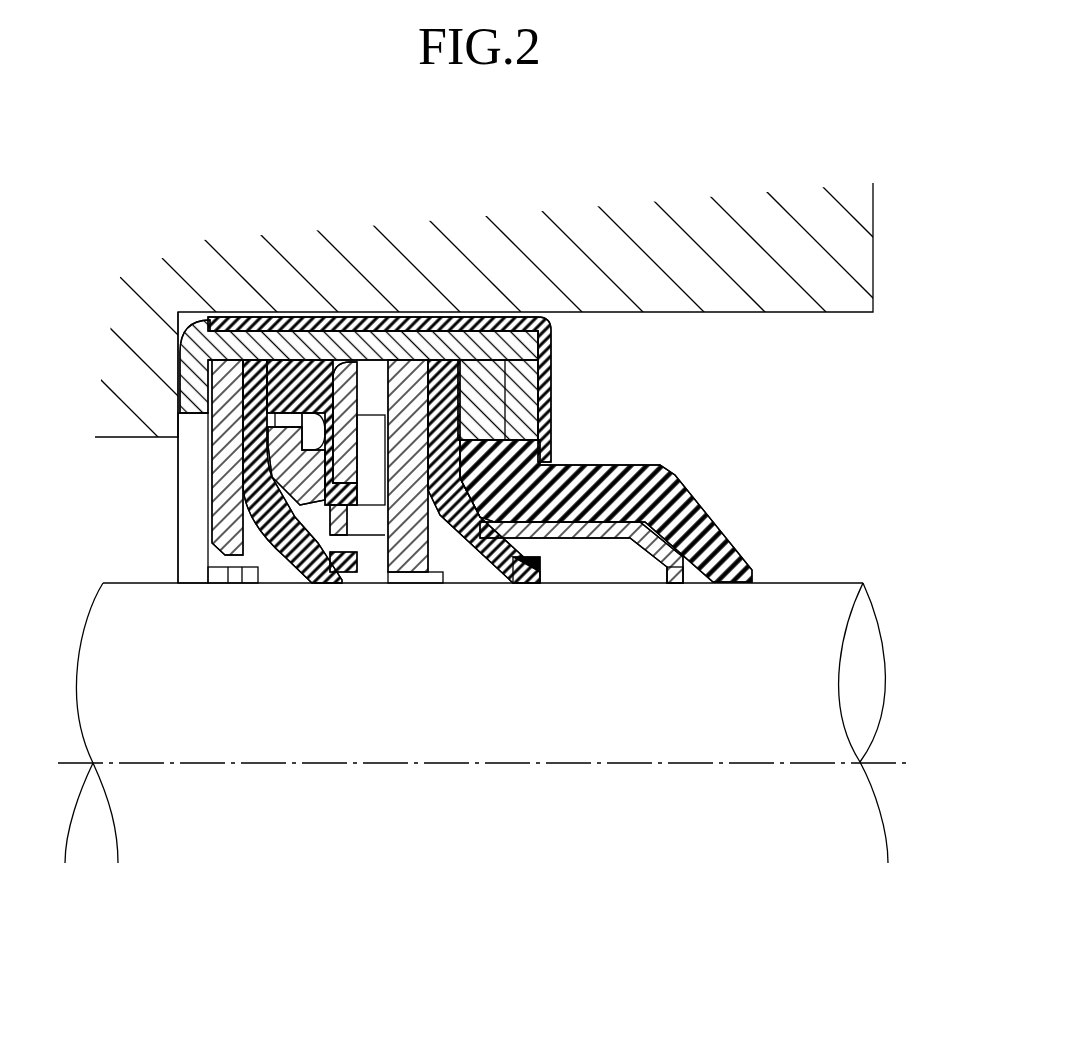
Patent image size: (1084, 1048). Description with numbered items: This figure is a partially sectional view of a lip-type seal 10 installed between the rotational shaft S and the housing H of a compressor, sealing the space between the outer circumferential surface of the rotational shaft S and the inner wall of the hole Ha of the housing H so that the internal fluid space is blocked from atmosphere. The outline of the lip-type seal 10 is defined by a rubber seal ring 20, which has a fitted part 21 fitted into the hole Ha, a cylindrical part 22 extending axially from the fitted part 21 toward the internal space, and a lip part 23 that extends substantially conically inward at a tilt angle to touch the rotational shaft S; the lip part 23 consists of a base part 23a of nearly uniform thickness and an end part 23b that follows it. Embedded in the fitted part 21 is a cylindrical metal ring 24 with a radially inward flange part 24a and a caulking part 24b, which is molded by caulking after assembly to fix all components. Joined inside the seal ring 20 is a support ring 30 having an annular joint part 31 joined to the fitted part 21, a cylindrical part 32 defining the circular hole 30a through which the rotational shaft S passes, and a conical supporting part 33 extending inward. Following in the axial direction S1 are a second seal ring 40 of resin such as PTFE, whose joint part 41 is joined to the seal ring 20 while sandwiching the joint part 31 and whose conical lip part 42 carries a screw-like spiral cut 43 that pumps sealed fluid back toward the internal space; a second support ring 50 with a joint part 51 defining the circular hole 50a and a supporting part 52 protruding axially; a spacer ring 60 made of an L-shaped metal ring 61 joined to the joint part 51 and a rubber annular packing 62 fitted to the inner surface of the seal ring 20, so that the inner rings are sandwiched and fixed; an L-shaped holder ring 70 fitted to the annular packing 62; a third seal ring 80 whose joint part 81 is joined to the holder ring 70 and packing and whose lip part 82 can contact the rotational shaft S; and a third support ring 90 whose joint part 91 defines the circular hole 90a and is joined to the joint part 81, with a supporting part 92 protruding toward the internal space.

The lip-type seal 10 is at (468, 298).
The seal ring 20 is at (562, 328).
The fitted part 21 is at (413, 395).
The cylindrical part 22 is at (600, 490).
The lip part 23 is at (712, 522).
The base part 23a is at (674, 488).
The end part 23b is at (742, 565).
The metal ring 24 is at (384, 350).
The flange part 24a is at (550, 392).
The caulking part 24b is at (182, 382).
The support ring 30 is at (548, 555).
The circular hole 30a is at (682, 583).
The joint part 31 is at (545, 360).
The cylindrical part 32 is at (578, 550).
The supporting part 33 is at (658, 560).
The second seal ring 40 is at (496, 560).
The joint part 41 is at (505, 390).
The lip part 42 is at (472, 560).
The spiral cut 43 is at (452, 583).
The second support ring 50 is at (405, 560).
The circular hole 50a is at (420, 583).
The joint part 51 is at (445, 395).
The supporting part 52 is at (425, 583).
The spacer ring 60 is at (377, 468).
The metal ring 61 is at (375, 400).
The annular packing 62 is at (340, 380).
The holder ring 70 is at (258, 560).
The third seal ring 80 is at (222, 545).
The joint part 81 is at (252, 365).
The lip part 82 is at (275, 568).
The third support ring 90 is at (212, 560).
The circular hole 90a is at (220, 583).
The joint part 91 is at (222, 405).
The supporting part 92 is at (232, 575).
The housing H is at (873, 258).
The hole Ha is at (795, 312).
The rotational shaft S is at (840, 582).
The axial direction S1 is at (668, 766).